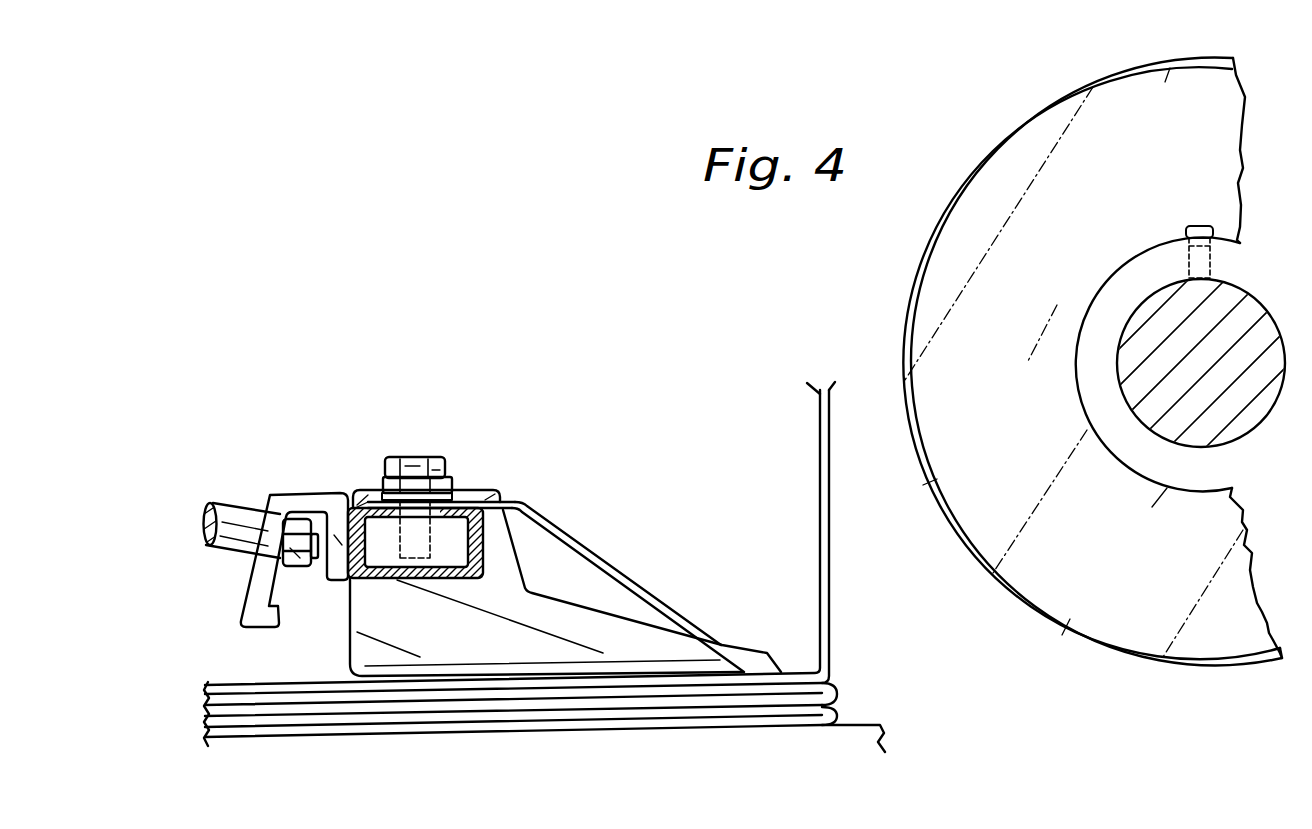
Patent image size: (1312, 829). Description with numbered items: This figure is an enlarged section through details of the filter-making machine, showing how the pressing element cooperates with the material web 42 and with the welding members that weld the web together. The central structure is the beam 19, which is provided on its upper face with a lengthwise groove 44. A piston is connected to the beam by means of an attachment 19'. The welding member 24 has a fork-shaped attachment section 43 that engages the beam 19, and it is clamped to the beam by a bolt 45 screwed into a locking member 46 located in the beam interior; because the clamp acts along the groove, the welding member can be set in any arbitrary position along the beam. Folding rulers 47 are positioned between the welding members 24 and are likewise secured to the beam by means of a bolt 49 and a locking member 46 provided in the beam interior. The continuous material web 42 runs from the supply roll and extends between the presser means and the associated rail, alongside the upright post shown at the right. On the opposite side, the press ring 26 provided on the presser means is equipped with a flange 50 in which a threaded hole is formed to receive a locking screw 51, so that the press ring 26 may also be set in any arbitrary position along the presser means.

The beam 19 is at (451, 466).
The attachment 19' is at (271, 532).
The welding member 24 is at (642, 640).
The press ring 26 is at (953, 258).
The material web 42 is at (820, 470).
The fork-shaped attachment section 43 is at (378, 492).
The lengthwise groove 44 is at (428, 512).
The bolt 45 is at (408, 460).
The locking member 46 is at (450, 530).
The folding ruler 47 is at (608, 567).
The bolt 49 is at (367, 507).
The flange 50 is at (1132, 255).
The locking screw 51 is at (1190, 233).